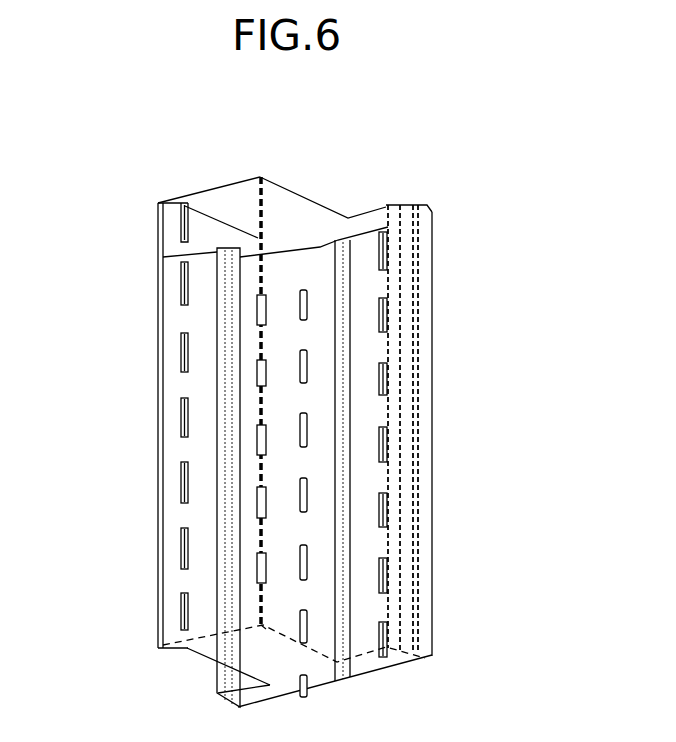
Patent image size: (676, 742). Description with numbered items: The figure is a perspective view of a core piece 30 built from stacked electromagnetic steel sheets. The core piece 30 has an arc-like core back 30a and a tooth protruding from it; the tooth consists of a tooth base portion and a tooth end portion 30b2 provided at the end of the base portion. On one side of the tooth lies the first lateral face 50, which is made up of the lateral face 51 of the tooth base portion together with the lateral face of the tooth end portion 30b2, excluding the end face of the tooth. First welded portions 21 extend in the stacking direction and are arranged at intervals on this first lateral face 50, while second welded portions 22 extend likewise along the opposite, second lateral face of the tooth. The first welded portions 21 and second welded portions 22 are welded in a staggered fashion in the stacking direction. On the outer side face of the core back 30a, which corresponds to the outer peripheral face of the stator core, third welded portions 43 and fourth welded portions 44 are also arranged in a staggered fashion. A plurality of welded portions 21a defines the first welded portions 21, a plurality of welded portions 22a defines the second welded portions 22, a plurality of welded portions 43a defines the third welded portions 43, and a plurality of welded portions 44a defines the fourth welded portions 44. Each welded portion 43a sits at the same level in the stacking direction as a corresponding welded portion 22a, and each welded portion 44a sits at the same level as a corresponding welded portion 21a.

The core piece 30 is at (281, 111).
The core back 30a is at (375, 220).
The tooth end portion 30b2 is at (213, 198).
The first welded portions 21 is at (259, 181).
The welded portions 21a is at (267, 238).
The second welded portions 22 is at (170, 217).
The welded portions 22a is at (183, 227).
The third welded portions 43 is at (393, 240).
The welded portions 43a is at (388, 262).
The fourth welded portions 44 is at (310, 288).
The welded portions 44a is at (307, 295).
The first lateral face 50 is at (317, 203).
The lateral face of the tooth base portion 51 is at (205, 253).